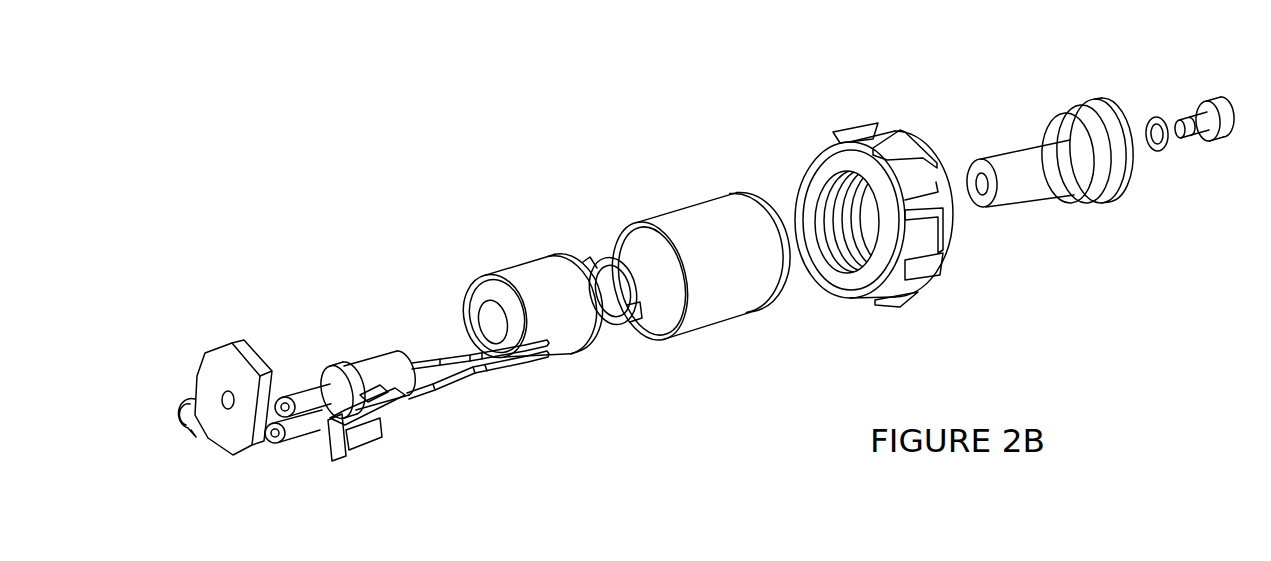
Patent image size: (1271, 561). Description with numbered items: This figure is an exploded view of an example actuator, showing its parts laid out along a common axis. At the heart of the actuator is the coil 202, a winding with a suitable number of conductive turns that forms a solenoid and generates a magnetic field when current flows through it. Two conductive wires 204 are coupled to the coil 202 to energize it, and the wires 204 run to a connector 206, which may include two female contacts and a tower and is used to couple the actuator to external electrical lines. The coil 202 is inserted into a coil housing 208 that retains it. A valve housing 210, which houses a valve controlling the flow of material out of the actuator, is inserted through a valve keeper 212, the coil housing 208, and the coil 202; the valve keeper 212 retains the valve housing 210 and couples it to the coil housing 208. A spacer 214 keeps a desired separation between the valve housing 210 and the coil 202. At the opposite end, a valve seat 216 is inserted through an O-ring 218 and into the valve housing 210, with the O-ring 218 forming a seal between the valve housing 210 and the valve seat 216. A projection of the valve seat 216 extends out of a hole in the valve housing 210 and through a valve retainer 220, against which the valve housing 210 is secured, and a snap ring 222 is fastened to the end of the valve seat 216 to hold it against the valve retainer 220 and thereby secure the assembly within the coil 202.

The coil 202 is at (593, 358).
The conductive wires 204 is at (454, 384).
The connector 206 is at (391, 424).
The coil housing 208 is at (681, 197).
The valve housing 210 is at (1006, 139).
The valve keeper 212 is at (909, 119).
The spacer 214 is at (632, 331).
The valve seat 216 is at (1234, 95).
The O-ring 218 is at (1149, 110).
The valve retainer 220 is at (254, 452).
The snap ring 222 is at (198, 442).